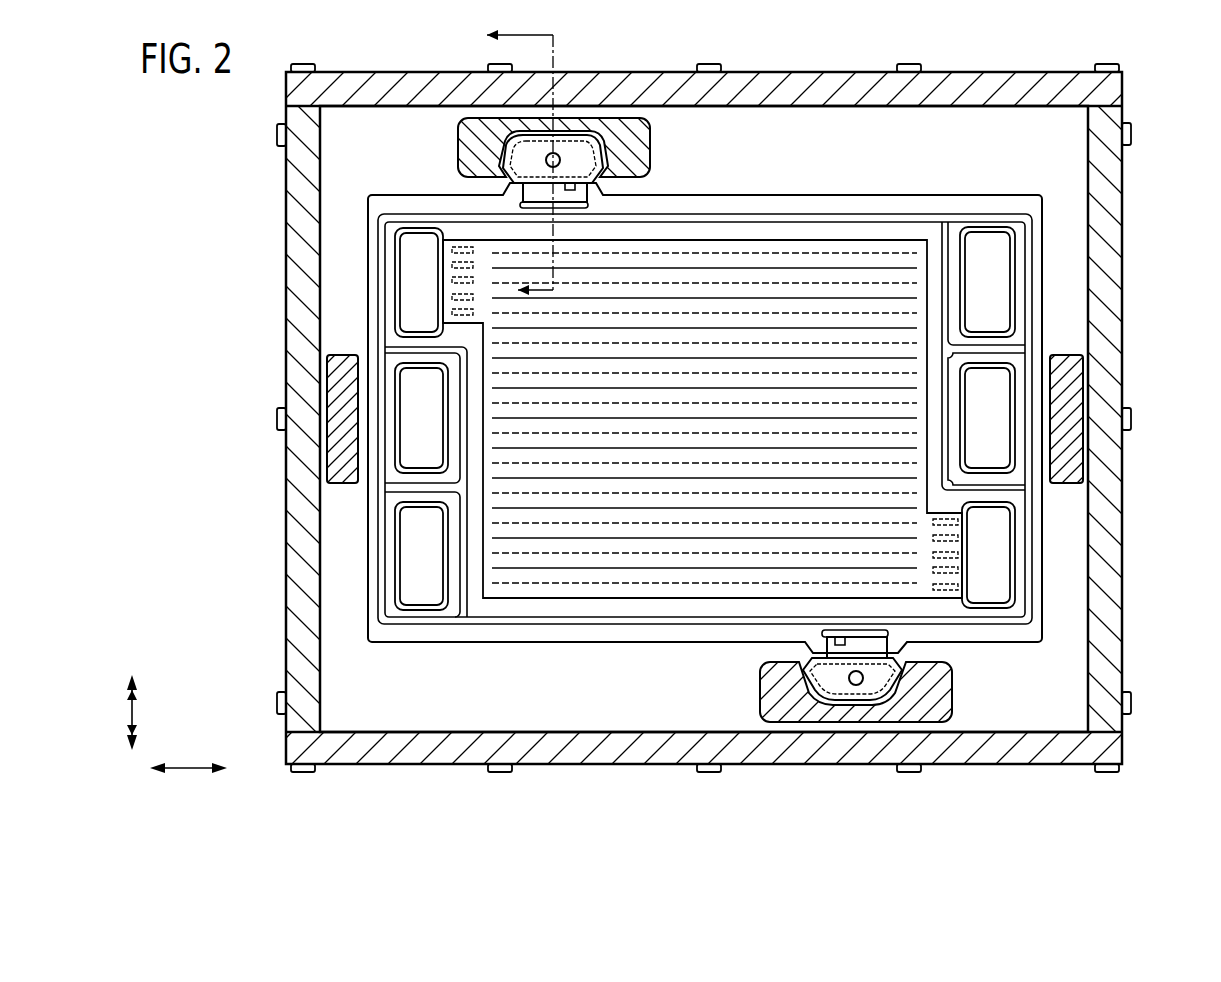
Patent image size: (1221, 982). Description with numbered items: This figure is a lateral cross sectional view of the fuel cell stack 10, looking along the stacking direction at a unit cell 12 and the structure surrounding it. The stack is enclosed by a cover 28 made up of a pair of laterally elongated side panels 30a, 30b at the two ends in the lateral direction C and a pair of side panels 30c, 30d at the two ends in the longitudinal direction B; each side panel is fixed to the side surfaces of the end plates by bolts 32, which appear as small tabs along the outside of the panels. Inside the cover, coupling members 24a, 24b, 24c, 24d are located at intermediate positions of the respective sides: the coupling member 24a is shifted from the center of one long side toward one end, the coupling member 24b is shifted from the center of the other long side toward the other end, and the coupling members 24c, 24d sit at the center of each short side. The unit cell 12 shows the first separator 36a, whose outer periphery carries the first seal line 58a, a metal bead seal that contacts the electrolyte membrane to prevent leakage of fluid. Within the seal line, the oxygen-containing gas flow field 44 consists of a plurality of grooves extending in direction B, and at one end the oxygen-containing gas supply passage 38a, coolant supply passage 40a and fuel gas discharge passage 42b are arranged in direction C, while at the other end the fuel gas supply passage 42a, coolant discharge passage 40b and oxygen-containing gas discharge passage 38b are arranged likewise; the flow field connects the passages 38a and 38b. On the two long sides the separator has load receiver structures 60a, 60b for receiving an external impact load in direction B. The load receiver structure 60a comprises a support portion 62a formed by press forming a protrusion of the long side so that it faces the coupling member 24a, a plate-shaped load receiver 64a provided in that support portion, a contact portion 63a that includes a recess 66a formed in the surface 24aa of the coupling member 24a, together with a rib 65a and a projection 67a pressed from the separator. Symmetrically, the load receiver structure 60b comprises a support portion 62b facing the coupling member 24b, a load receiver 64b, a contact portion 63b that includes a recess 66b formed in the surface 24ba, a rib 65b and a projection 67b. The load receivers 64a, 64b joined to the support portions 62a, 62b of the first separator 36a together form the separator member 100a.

The fuel cell stack 10 is at (206, 110).
The unit cell 12 is at (702, 389).
The coupling member 24a is at (626, 117).
The surface of the coupling member 24aa is at (477, 177).
The coupling member 24b is at (778, 707).
The surface of the coupling member 24ba is at (933, 660).
The coupling member 24c is at (340, 450).
The coupling member 24d is at (1067, 437).
The cover 28 is at (703, 412).
The side panel 30a is at (996, 84).
The side panel 30b is at (452, 754).
The side panel 30c is at (297, 593).
The side panel 30d is at (1110, 580).
The bolt 32 is at (303, 64).
The first separator 36a is at (1010, 198).
The oxygen-containing gas supply passage 38a is at (415, 270).
The oxygen-containing gas discharge passage 38b is at (993, 553).
The coolant supply passage 40a is at (415, 390).
The coolant discharge passage 40b is at (993, 397).
The fuel gas supply passage 42a is at (993, 272).
The fuel gas discharge passage 42b is at (415, 560).
The oxygen-containing gas flow field 44 is at (797, 250).
The first seal line 58a is at (886, 214).
The load receiver structure 60a is at (545, 117).
The load receiver structure 60b is at (861, 714).
The support portion 62a is at (598, 187).
The support portion 62b is at (805, 648).
The contact portion 63a is at (487, 149).
The contact portion 63b is at (795, 685).
The load receiver 64a is at (592, 150).
The load receiver 64b is at (910, 686).
The rib 65a is at (542, 202).
The rib 65b is at (870, 637).
The recess 66a is at (500, 153).
The recess 66b is at (808, 692).
The projection 67a is at (570, 188).
The projection 67b is at (840, 646).
The separator member 100a is at (1030, 139).